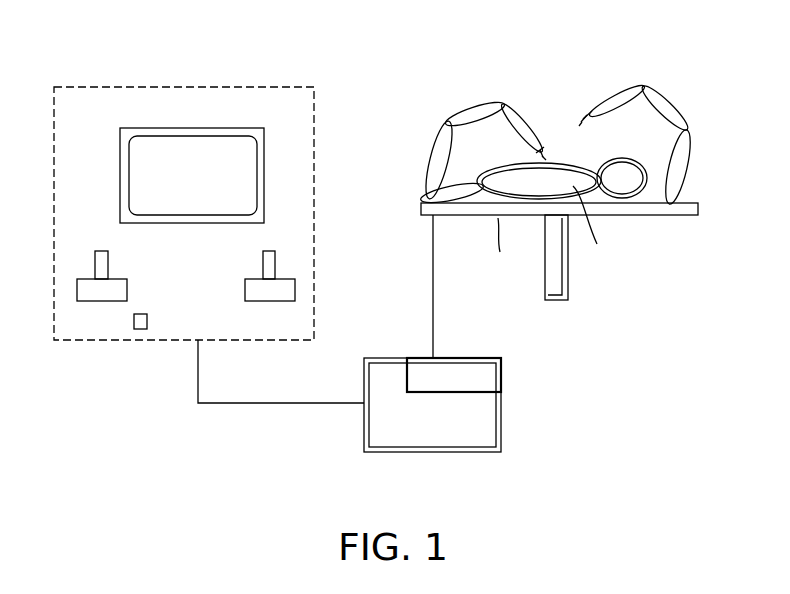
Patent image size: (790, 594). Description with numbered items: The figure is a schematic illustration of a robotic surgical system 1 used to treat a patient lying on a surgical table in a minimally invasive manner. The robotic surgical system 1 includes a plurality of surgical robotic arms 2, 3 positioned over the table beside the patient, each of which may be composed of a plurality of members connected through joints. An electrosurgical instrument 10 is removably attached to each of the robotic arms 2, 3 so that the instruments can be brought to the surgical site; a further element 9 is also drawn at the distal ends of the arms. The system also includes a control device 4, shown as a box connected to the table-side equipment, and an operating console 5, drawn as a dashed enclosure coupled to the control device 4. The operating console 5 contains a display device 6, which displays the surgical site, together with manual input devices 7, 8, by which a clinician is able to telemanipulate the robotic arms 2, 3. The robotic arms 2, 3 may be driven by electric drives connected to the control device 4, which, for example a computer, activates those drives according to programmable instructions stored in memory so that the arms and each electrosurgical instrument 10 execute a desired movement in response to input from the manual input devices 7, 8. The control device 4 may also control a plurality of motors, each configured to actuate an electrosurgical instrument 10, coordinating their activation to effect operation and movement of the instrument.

The robotic surgical system 1 is at (615, 363).
The surgical robotic arm 2 is at (437, 108).
The surgical robotic arm 3 is at (663, 105).
The control device 4 is at (441, 430).
The operating console 5 is at (128, 77).
The display device 6 is at (201, 187).
The manual input device 7 is at (92, 293).
The manual input device 8 is at (270, 290).
The surgical instrument 9 is at (540, 148).
The electrosurgical instrument 10 is at (585, 114).